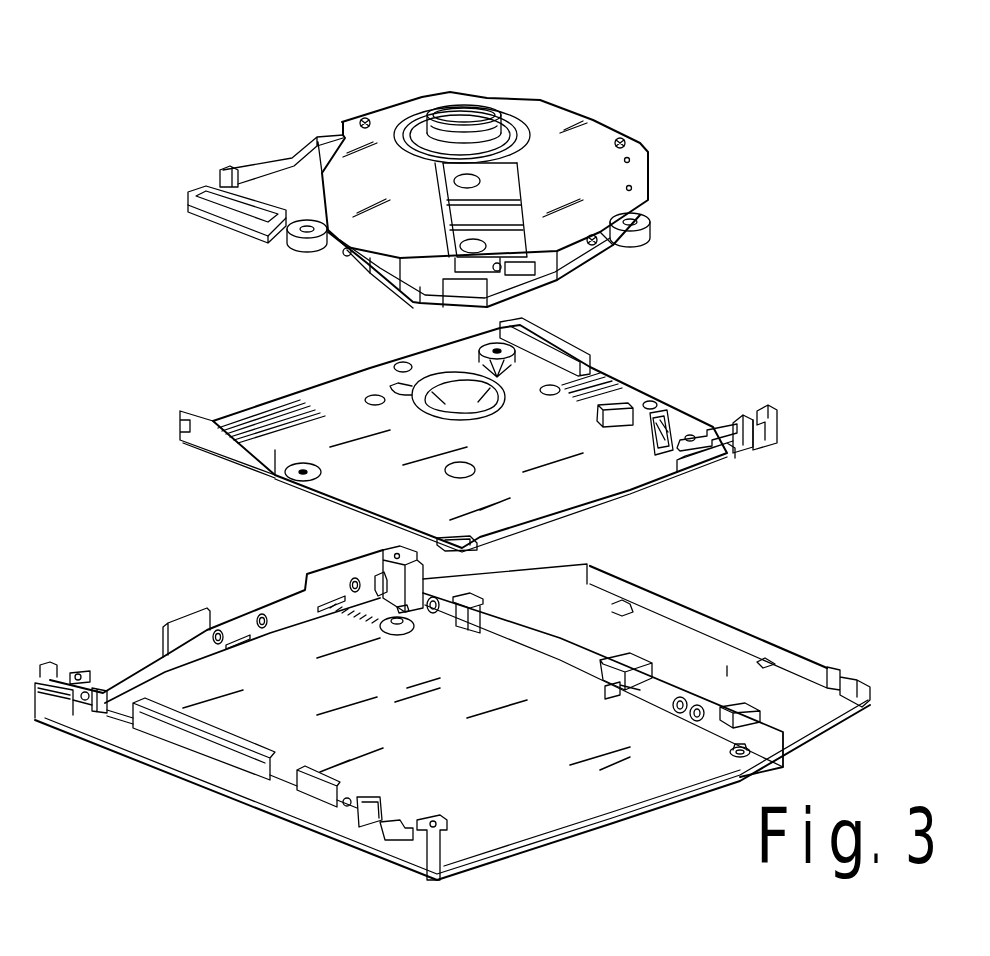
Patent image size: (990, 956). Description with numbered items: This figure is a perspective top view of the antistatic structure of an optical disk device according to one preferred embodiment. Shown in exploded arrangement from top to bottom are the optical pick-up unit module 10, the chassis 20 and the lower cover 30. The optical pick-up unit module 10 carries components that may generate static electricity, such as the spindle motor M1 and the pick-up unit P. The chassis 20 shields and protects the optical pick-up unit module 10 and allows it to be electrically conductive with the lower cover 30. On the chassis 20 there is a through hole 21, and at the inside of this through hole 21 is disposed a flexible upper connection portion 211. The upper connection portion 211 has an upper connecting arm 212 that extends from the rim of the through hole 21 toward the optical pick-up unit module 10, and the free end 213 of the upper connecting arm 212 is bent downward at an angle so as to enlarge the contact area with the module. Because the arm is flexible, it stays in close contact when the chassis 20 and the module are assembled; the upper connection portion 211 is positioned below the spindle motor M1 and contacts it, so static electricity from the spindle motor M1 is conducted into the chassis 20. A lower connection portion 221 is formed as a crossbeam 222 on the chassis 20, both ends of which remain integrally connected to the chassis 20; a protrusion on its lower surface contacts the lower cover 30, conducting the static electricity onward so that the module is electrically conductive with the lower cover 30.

The optical pick-up unit module 10 is at (553, 100).
The spindle motor M1 is at (463, 118).
The pick-up unit P is at (500, 187).
The chassis 20 is at (627, 392).
The through hole 21 is at (430, 380).
The upper connection portion 211 is at (500, 370).
The upper connecting arm 212 is at (483, 373).
The free end 213 is at (423, 390).
The lower connection portion 221 is at (660, 413).
The crossbeam 222 is at (673, 447).
The lower cover 30 is at (615, 727).